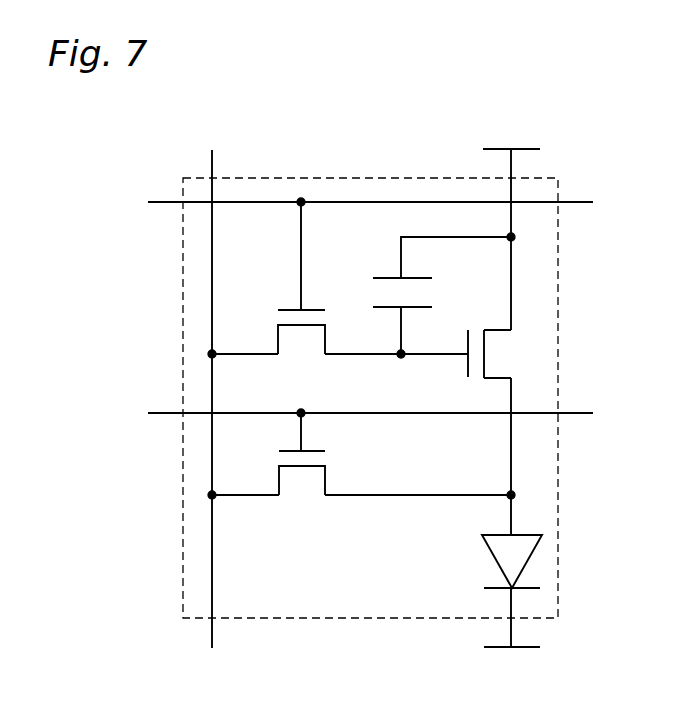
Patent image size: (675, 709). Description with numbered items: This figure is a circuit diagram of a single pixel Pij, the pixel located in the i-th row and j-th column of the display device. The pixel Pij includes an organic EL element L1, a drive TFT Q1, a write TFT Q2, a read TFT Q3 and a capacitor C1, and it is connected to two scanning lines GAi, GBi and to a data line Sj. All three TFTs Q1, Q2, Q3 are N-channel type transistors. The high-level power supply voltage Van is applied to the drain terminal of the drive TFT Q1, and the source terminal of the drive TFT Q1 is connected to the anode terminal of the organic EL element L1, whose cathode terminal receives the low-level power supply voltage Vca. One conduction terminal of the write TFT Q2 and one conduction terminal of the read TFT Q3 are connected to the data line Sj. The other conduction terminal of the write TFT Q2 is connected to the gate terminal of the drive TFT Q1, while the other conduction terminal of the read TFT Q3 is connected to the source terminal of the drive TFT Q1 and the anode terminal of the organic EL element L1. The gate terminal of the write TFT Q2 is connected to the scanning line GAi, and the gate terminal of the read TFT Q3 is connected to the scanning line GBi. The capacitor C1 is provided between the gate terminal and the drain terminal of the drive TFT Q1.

The pixel Pij is at (368, 178).
The data line Sj is at (207, 385).
The scanning line GAi is at (348, 203).
The scanning line GBi is at (348, 414).
The high-level power supply voltage Van is at (511, 227).
The low-level power supply voltage Vca is at (512, 665).
The drive TFT Q1 is at (493, 328).
The write TFT Q2 is at (277, 308).
The read TFT Q3 is at (327, 481).
The capacitor C1 is at (371, 277).
The organic EL element L1 is at (497, 566).